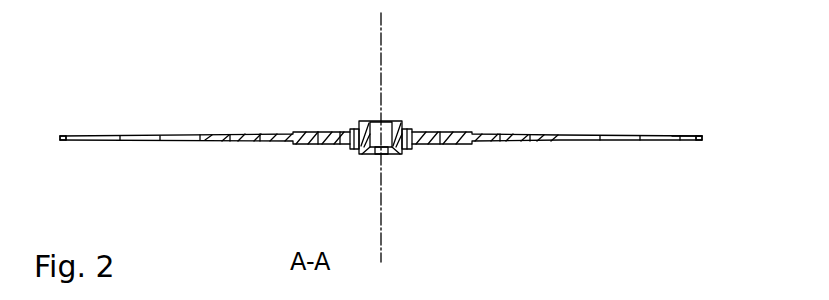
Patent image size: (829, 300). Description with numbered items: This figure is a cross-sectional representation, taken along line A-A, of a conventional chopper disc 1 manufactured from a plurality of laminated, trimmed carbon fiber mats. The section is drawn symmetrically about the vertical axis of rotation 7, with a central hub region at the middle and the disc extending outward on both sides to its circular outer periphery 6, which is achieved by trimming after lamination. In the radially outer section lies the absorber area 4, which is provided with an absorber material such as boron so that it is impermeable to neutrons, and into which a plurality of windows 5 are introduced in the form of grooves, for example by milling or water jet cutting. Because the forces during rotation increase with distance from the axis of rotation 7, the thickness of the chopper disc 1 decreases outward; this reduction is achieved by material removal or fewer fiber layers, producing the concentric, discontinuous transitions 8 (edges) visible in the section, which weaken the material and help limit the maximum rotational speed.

The chopper disc 1 is at (561, 57).
The absorber area 4 is at (659, 123).
The windows 5 is at (681, 133).
The circular outer periphery 6 is at (702, 133).
The axis of rotation 7 is at (381, 18).
The concentric discontinuous transitions 8 is at (450, 131).